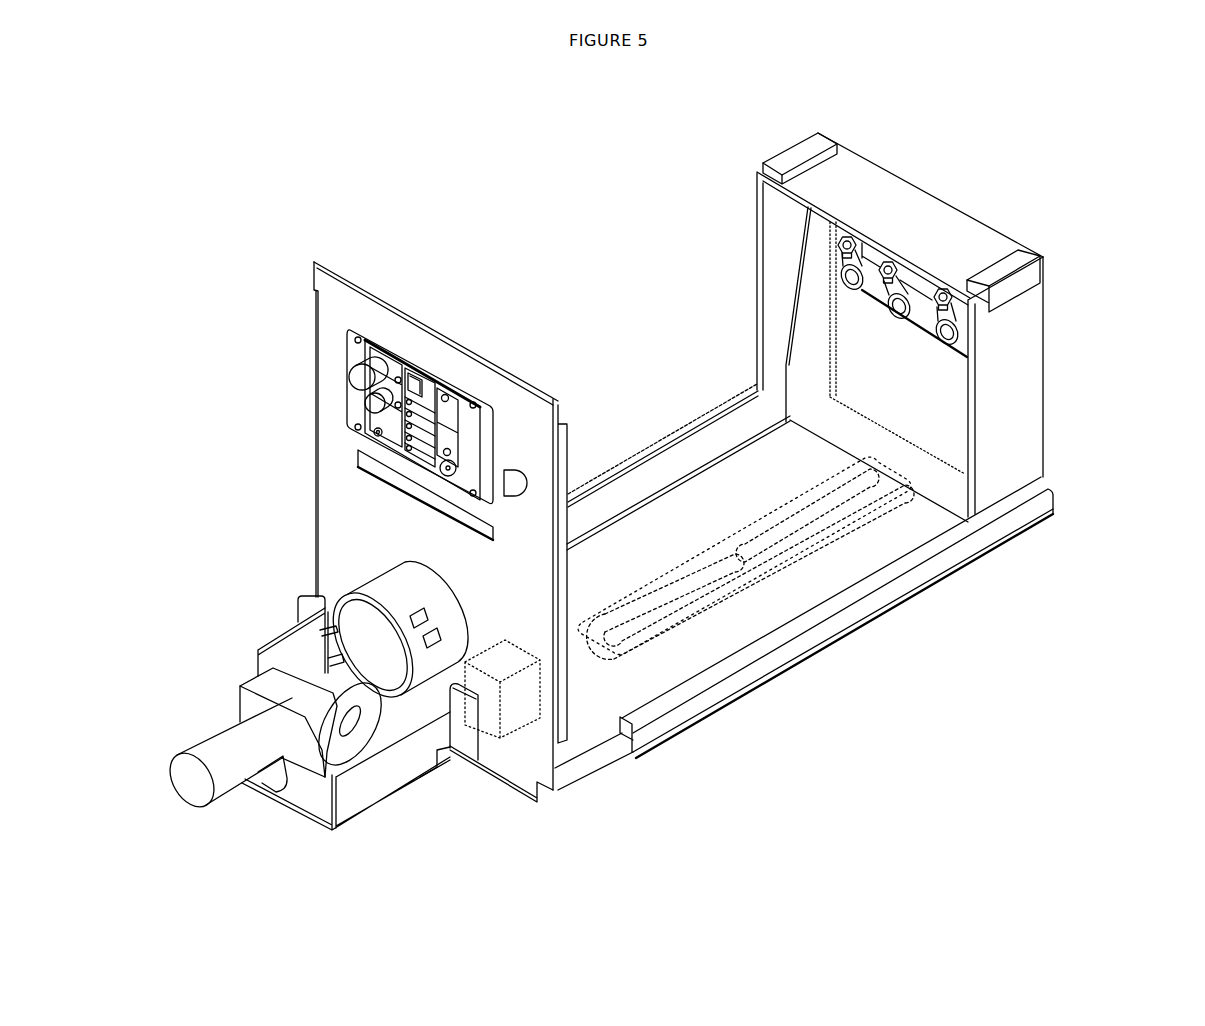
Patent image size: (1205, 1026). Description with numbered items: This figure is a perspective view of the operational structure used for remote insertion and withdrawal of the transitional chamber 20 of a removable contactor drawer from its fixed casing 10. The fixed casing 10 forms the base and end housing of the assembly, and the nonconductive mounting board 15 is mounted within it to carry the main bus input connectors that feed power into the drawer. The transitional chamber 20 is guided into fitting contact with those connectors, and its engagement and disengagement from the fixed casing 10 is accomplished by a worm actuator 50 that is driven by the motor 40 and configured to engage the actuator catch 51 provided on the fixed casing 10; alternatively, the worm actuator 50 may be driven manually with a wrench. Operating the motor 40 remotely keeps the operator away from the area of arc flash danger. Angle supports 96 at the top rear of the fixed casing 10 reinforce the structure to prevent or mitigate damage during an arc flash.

The fixed casing 10 is at (973, 483).
The nonconductive mounting board 15 is at (857, 297).
The transitional chamber 20 is at (309, 377).
The motor 40 is at (485, 765).
The worm actuator 50 is at (580, 658).
The actuator catch 51 is at (617, 643).
The angle support 96 is at (775, 141).